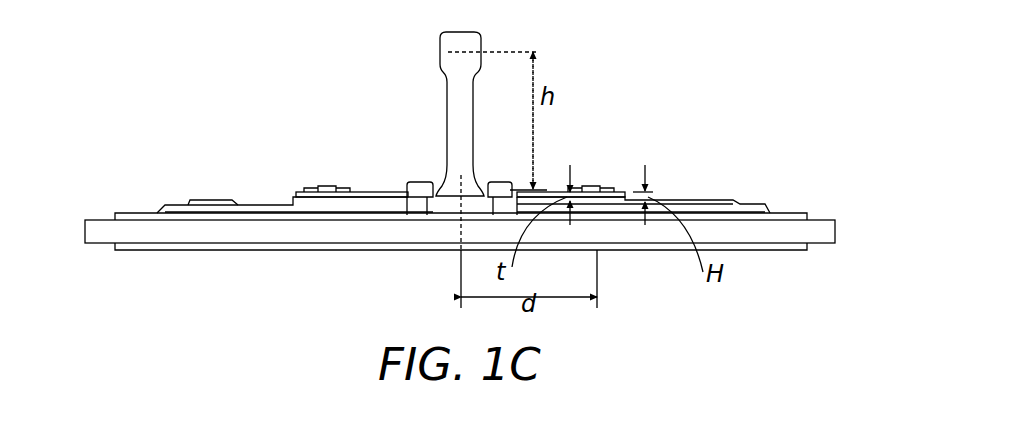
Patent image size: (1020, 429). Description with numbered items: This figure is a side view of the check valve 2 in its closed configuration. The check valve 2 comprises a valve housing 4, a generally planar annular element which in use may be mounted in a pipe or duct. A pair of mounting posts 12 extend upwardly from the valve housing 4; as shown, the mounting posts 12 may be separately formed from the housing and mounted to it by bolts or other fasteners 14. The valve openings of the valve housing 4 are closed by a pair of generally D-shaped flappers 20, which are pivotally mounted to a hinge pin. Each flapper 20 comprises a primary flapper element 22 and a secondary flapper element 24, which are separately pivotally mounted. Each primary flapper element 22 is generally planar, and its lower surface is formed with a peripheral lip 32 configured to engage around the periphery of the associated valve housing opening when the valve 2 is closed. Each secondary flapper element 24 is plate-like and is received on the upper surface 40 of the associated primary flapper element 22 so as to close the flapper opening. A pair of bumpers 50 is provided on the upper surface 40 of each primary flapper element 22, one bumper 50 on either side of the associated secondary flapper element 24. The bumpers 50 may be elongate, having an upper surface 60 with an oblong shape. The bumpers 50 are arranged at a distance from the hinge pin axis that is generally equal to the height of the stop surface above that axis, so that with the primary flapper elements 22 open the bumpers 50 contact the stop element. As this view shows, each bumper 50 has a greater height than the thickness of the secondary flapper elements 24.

The check valve 2 is at (79, 110).
The valve housing 4 is at (835, 232).
The mounting post 12 is at (450, 104).
The fastener 14 is at (420, 183).
The flapper 20 is at (292, 190).
The primary flapper element 22 is at (262, 201).
The secondary flapper element 24 is at (376, 192).
The peripheral lip 32 is at (160, 206).
The upper surface 40 is at (238, 200).
The bumper 50 is at (330, 190).
The upper surface 60 is at (314, 190).